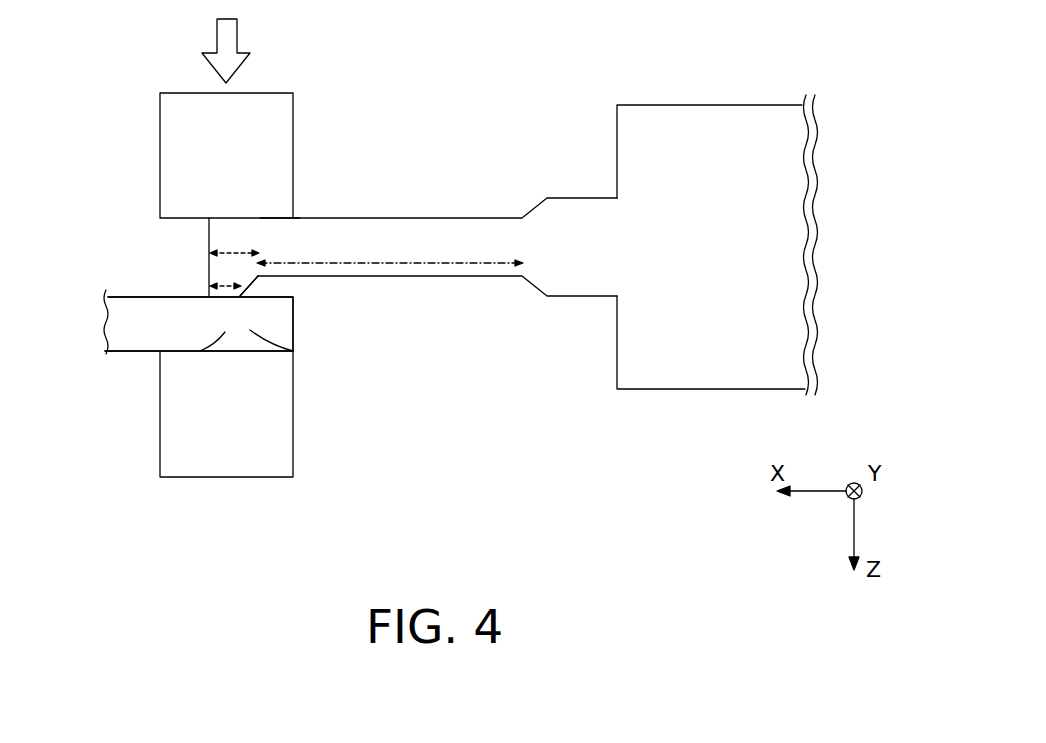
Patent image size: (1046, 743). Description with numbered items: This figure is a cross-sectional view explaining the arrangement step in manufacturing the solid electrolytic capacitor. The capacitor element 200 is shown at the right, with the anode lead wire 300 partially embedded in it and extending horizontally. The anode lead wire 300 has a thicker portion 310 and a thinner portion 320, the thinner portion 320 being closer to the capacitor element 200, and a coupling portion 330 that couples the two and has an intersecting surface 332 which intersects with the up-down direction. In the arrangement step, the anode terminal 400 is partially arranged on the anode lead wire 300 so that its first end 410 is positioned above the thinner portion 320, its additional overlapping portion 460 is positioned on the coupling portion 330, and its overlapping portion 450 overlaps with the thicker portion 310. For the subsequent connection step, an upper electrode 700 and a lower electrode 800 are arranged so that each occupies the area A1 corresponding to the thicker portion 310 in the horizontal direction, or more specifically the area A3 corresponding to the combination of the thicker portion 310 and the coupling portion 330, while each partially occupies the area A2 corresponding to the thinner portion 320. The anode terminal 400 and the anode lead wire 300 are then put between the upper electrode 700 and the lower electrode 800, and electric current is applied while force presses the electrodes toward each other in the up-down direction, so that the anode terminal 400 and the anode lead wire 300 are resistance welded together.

The lower electrode 800 is at (178, 134).
The anode lead wire 300 is at (455, 221).
The thicker portion 310 is at (227, 232).
The thinner portion 320 is at (277, 246).
The intersecting surface 332 is at (257, 282).
The coupling portion 330 is at (249, 286).
The anode terminal 400 is at (125, 298).
The first end 410 is at (293, 322).
The overlapping portion 450 is at (225, 332).
The additional overlapping portion 460 is at (250, 330).
The upper electrode 700 is at (187, 434).
The capacitor element 200 is at (668, 388).
The area A1 is at (226, 286).
The area A2 is at (398, 262).
The area A3 is at (235, 253).